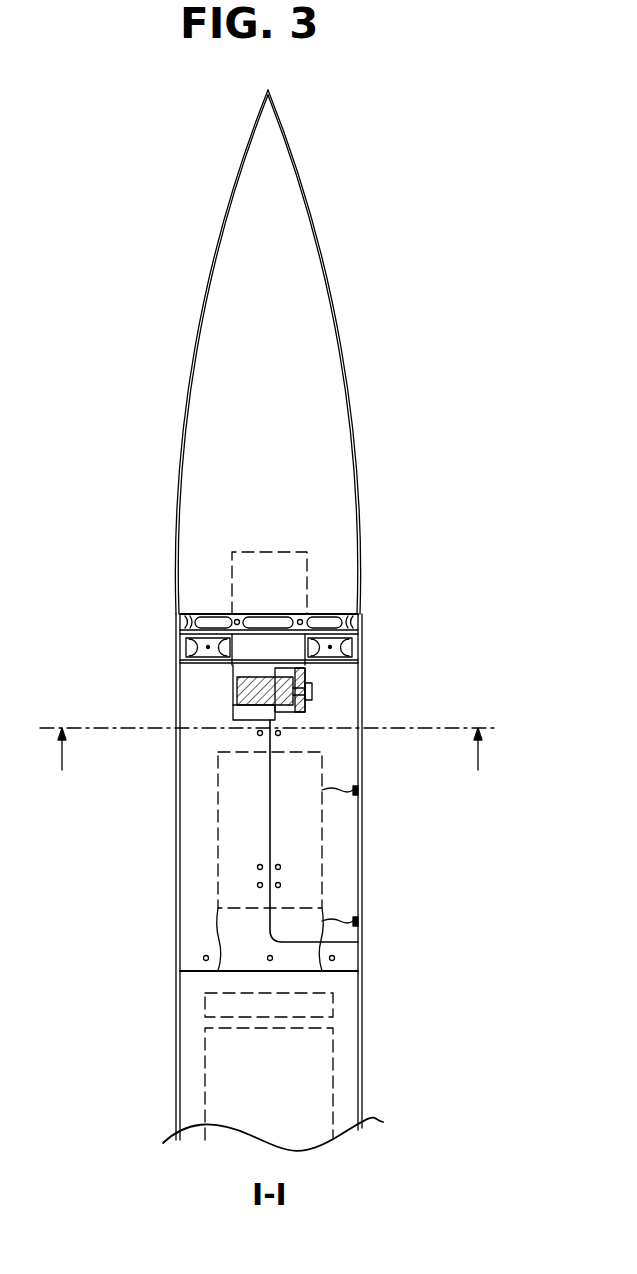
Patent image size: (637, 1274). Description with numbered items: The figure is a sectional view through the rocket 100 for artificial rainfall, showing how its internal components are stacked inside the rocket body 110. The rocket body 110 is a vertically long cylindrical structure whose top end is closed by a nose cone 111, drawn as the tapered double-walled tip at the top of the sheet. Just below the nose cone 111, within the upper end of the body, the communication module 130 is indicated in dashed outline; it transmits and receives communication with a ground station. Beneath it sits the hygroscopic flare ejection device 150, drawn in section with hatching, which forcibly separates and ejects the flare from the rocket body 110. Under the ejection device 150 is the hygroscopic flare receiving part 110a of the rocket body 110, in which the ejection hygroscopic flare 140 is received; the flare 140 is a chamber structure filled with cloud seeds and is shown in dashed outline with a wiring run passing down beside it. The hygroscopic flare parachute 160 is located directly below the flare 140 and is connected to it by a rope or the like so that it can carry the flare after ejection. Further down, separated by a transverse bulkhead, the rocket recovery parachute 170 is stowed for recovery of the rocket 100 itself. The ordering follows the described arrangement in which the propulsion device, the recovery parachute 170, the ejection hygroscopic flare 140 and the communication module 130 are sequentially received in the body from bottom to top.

The rocket 100 is at (456, 349).
The rocket body 110 is at (402, 694).
The hygroscopic flare receiving part 110a is at (343, 865).
The nose cone 111 is at (320, 232).
The communication module 130 is at (307, 582).
The ejection hygroscopic flare 140 is at (218, 870).
The hygroscopic flare ejection device 150 is at (230, 688).
The hygroscopic flare parachute 160 is at (218, 935).
The rocket recovery parachute 170 is at (205, 1072).